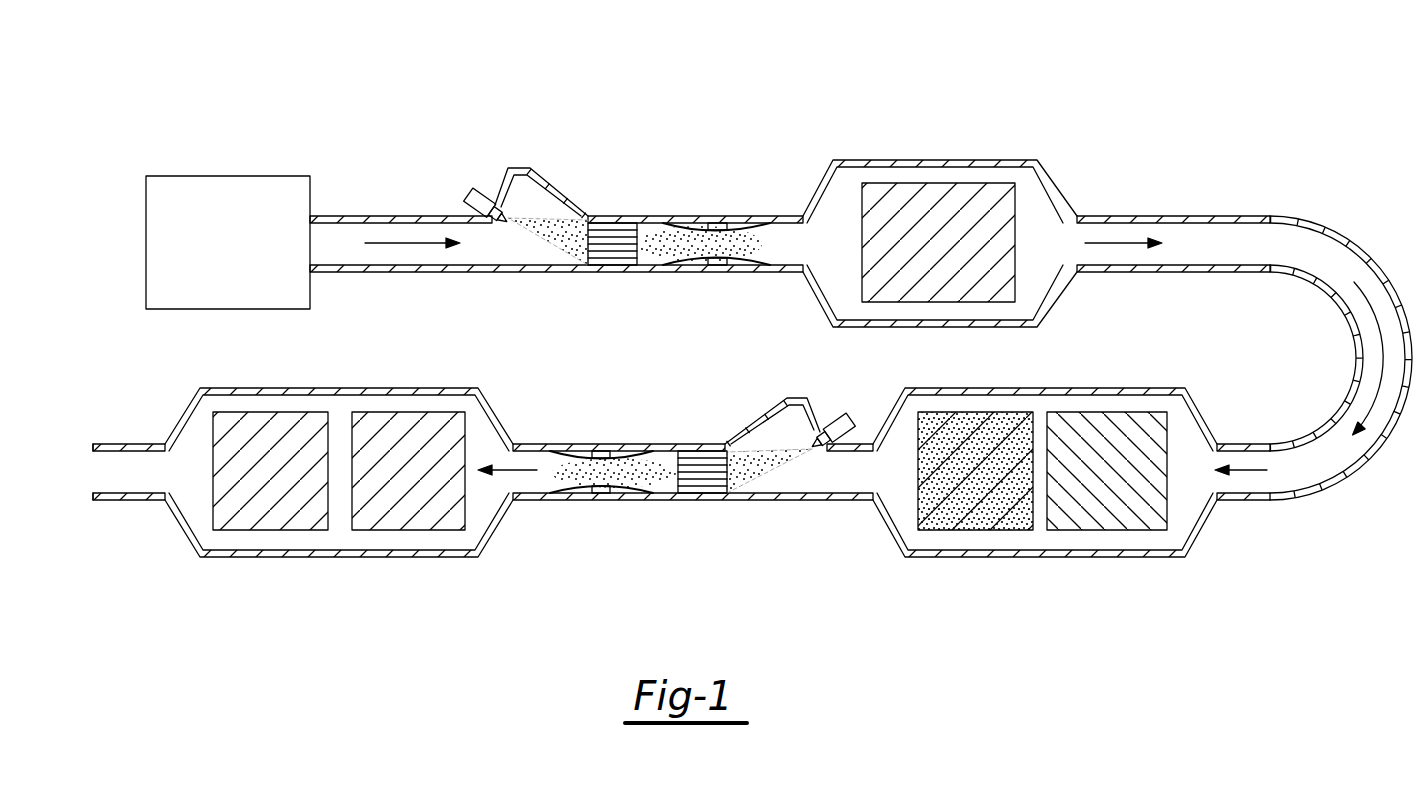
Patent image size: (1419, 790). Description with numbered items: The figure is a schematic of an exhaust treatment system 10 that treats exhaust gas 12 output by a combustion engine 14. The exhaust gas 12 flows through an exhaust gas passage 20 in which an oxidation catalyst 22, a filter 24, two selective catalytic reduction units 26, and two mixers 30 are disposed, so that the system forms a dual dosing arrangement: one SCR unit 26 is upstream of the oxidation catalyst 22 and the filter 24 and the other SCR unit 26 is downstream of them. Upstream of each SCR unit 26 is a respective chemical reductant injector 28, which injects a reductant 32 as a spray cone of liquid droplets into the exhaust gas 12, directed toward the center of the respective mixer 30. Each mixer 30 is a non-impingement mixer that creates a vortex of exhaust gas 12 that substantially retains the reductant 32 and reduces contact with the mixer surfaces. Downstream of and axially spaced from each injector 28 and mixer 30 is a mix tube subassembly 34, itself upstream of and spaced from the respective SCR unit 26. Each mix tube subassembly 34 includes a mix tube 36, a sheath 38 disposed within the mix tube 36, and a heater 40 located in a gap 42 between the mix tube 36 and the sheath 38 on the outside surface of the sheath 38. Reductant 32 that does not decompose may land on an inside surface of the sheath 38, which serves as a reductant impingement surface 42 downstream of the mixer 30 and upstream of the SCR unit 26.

The exhaust treatment system 10 is at (1135, 52).
The exhaust gas 12 is at (397, 240).
The combustion engine 14 is at (196, 176).
The exhaust gas passage 20 is at (333, 240).
The oxidation catalyst 22 is at (1100, 515).
The filter 24 is at (940, 505).
The selective catalytic reduction unit 26 is at (940, 160).
The chemical reductant injector 28 is at (480, 192).
The mixer 30 is at (620, 206).
The reductant 32 is at (570, 233).
The mix tube subassembly 34 is at (697, 291).
The mix tube 36 is at (655, 218).
The sheath 38 is at (705, 224).
The heater 40 is at (722, 228).
The gap 42 is at (752, 254).